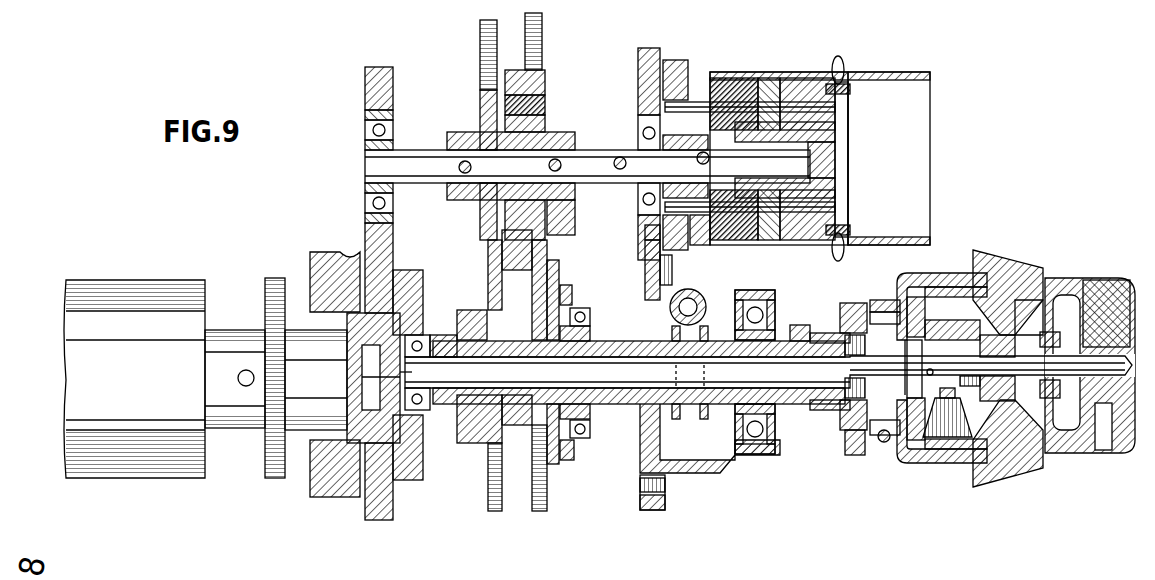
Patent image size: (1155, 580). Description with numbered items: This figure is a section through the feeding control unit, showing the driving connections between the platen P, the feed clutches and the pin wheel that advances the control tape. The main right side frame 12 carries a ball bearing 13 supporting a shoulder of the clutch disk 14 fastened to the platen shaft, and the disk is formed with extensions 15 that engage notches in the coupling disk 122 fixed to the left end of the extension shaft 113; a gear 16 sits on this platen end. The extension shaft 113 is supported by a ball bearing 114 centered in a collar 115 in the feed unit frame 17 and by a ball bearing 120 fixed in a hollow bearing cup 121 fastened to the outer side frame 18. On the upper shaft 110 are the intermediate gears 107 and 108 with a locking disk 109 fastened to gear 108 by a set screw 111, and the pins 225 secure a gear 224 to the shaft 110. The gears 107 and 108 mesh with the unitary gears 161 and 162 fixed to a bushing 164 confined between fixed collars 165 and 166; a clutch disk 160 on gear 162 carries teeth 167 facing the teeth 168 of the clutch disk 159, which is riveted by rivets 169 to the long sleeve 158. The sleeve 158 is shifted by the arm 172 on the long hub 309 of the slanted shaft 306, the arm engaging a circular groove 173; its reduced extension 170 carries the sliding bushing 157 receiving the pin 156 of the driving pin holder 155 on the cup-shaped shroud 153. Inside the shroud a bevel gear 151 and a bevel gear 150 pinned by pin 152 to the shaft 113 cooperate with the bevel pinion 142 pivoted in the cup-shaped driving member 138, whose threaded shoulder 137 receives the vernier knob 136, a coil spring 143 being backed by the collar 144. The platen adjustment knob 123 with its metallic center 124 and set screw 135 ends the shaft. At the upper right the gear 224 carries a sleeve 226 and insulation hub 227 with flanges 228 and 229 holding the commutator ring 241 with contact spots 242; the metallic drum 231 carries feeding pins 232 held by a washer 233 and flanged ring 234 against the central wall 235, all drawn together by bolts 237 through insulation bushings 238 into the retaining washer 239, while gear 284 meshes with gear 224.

The power source / motor P is at (130, 292).
The main right side frame 12 is at (318, 258).
The ball bearing 13 is at (312, 330).
The clutch disk 14 is at (352, 468).
The extensions 15 is at (405, 375).
The gear 16 is at (266, 481).
The feed unit frame 17 is at (366, 88).
The outer side frame 18 is at (638, 60).
The intermediate gear 107 is at (481, 103).
The intermediate gear 108 is at (545, 112).
The locking disk 109 is at (505, 124).
The shaft 110 is at (385, 162).
The set screw 111 is at (540, 103).
The extension shaft 113 is at (626, 390).
The ball bearing 114 is at (430, 410).
The annular ring or collar 115 is at (412, 492).
The ball bearing 120 is at (776, 425).
The hollow bearing cup 121 is at (722, 470).
The coupling disk 122 is at (422, 312).
The platen adjustment knob 123 is at (1082, 292).
The metallic center 124 is at (1110, 292).
The set screw 135 is at (1118, 452).
The vernier knob 136 is at (986, 258).
The threaded shoulder 137 is at (1008, 402).
The cup-shaped driving member 138 is at (985, 470).
The bevel pinion 142 is at (945, 440).
The coil spring 143 is at (1020, 325).
The collar 144 is at (1052, 330).
The bevel gear 150 is at (920, 318).
The bevel gear 151 is at (908, 463).
The pin 152 is at (934, 371).
The cup-shaped shroud 153 is at (940, 274).
The driving pin holder 155 is at (885, 446).
The pin 156 is at (858, 425).
The sliding bushing 157 is at (865, 302).
The long sleeve 158 is at (656, 406).
The clutch disk 159 is at (572, 297).
The clutch disk 160 is at (549, 290).
The gear 161 is at (489, 506).
The gear 162 is at (540, 508).
The bushing 164 is at (476, 440).
The fixed collar 165 is at (446, 338).
The fixed collar 166 is at (590, 330).
The teeth 167 is at (552, 466).
The teeth 168 is at (568, 468).
The rivets 169 is at (590, 315).
The reduced extension 170 is at (815, 340).
The arm 172 is at (722, 312).
The circular groove 173 is at (690, 410).
The gear 224 is at (663, 96).
The set screw 225 is at (710, 158).
The sleeve 226 is at (830, 142).
The insulation hub 227 is at (800, 122).
The flange 228 is at (795, 76).
The flange 229 is at (714, 80).
The metallic drum 231 is at (922, 72).
The feeding pins 232 is at (845, 62).
The annular ring or washer 233 is at (852, 90).
The flanged ring 234 is at (848, 100).
The central wall 235 is at (835, 252).
The stay rods or bolts 237 is at (790, 212).
The insulation bushings 238 is at (705, 240).
The retaining washer 239 is at (645, 233).
The insulation commutator ring 241 is at (745, 75).
The metallic contact spots 242 is at (740, 78).
The gear 284 is at (645, 255).
The slanted shaft 306 is at (700, 300).
The long hub 309 is at (672, 298).